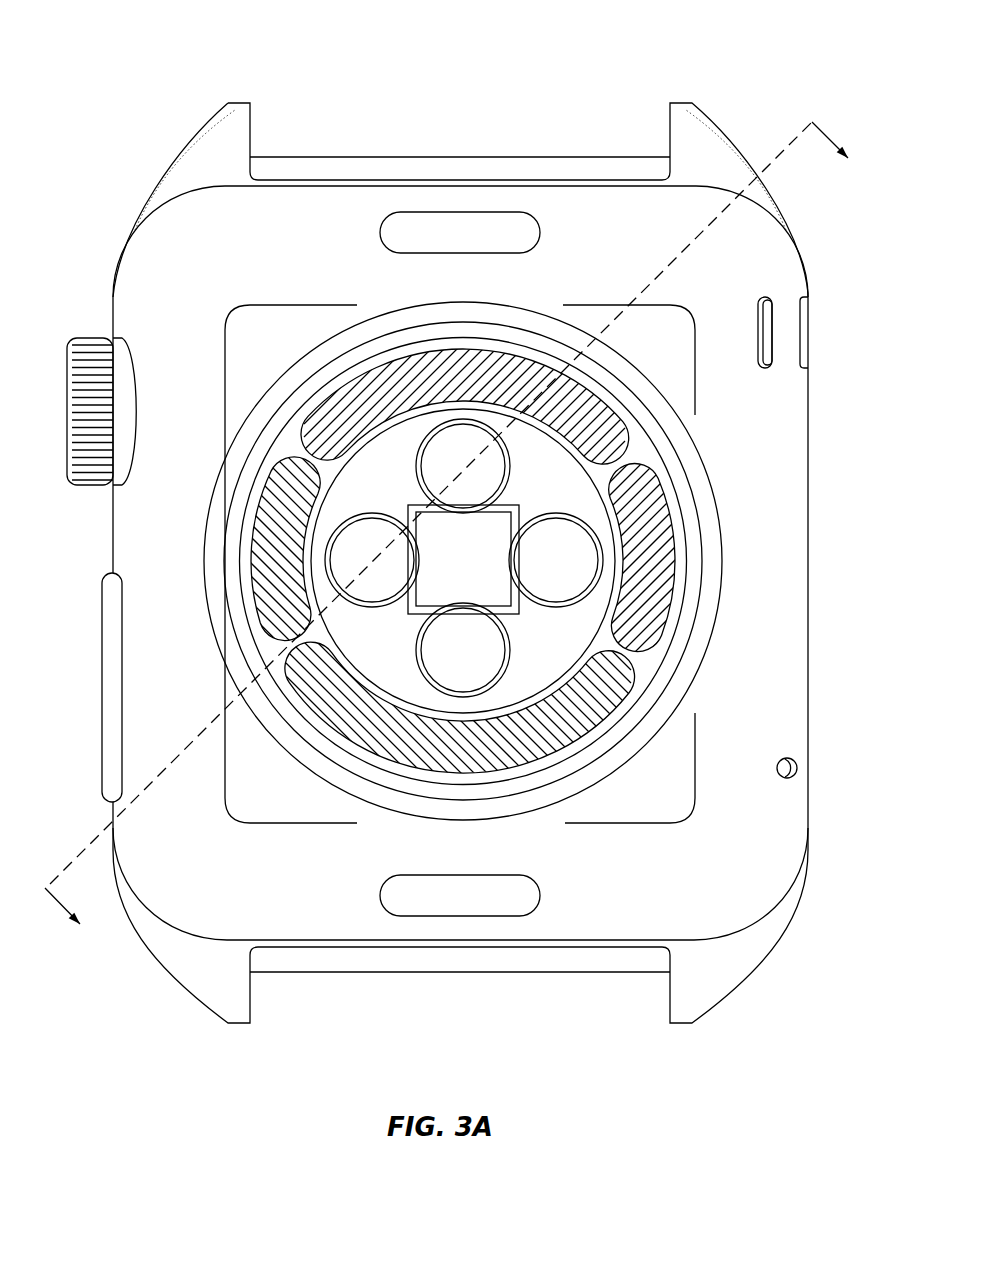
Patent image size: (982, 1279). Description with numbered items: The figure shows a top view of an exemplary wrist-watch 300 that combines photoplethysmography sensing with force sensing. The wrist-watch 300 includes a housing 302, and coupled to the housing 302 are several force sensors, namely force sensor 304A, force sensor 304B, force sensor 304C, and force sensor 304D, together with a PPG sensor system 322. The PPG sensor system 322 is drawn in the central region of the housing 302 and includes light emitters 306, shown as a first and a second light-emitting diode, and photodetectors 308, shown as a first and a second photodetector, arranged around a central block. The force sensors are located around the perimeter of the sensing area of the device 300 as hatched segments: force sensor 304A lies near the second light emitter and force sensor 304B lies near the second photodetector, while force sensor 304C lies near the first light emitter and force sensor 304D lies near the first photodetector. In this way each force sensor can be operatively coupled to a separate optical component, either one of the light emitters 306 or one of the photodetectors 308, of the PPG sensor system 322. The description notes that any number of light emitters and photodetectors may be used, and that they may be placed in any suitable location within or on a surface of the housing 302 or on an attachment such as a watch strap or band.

The wrist-watch 300 is at (129, 90).
The housing 302 is at (808, 552).
The force sensor 304A is at (676, 612).
The force sensor 304B is at (515, 770).
The force sensor 304C is at (253, 589).
The force sensor 304D is at (562, 376).
The light emitters 306 is at (560, 535).
The photodetectors 308 is at (449, 425).
The PPG sensor system 322 is at (423, 413).